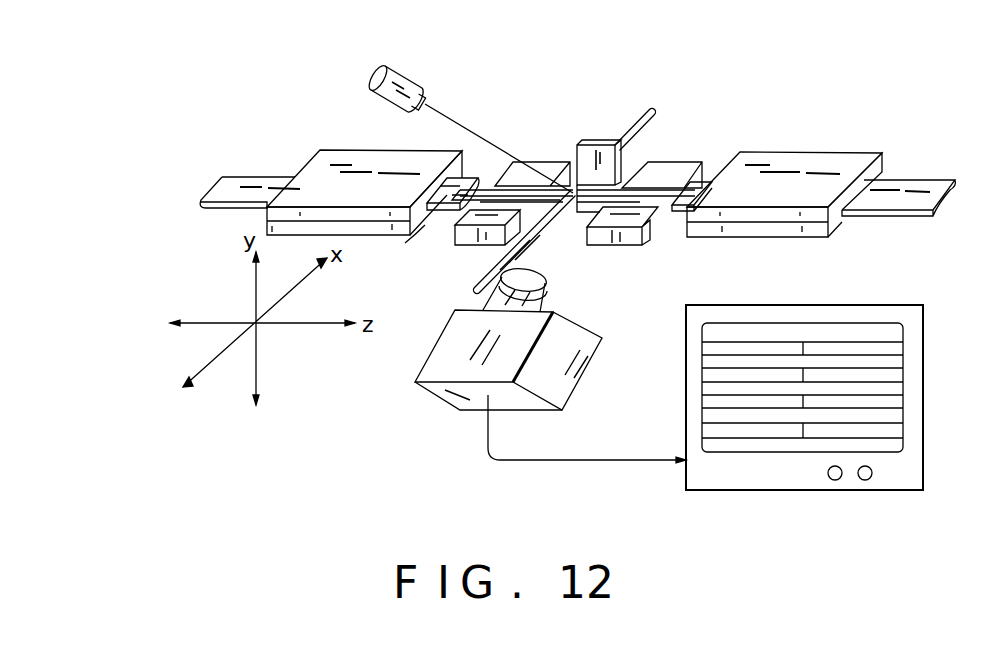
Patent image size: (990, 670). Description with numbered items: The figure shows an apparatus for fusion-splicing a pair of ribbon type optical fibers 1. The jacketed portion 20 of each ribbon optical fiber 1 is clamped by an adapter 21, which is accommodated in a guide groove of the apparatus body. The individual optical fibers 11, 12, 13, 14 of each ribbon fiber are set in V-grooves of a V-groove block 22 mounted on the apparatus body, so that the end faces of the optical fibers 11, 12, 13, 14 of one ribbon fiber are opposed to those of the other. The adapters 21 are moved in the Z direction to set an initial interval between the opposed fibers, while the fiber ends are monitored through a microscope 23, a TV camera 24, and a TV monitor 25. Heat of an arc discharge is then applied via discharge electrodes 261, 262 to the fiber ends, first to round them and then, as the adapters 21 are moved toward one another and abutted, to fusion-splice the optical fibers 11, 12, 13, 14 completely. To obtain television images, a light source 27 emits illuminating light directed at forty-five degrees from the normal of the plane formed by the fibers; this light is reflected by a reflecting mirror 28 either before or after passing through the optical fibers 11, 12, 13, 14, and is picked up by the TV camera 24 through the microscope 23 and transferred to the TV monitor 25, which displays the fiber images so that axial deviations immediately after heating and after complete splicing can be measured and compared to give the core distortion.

The ribbon type optical fiber 1 is at (203, 173).
The optical fiber 11 is at (518, 188).
The optical fiber 12 is at (532, 187).
The optical fiber 13 is at (487, 240).
The optical fiber 14 is at (463, 213).
The jacketed portion 20 is at (262, 184).
The adapter 21 is at (344, 160).
The V-groove block 22 is at (510, 174).
The microscope 23 is at (530, 305).
The TV camera 24 is at (588, 353).
The TV monitor 25 is at (786, 306).
The discharge electrode 261 is at (636, 130).
The discharge electrode 262 is at (474, 291).
The light source 27 is at (410, 76).
The reflecting mirror 28 is at (596, 160).